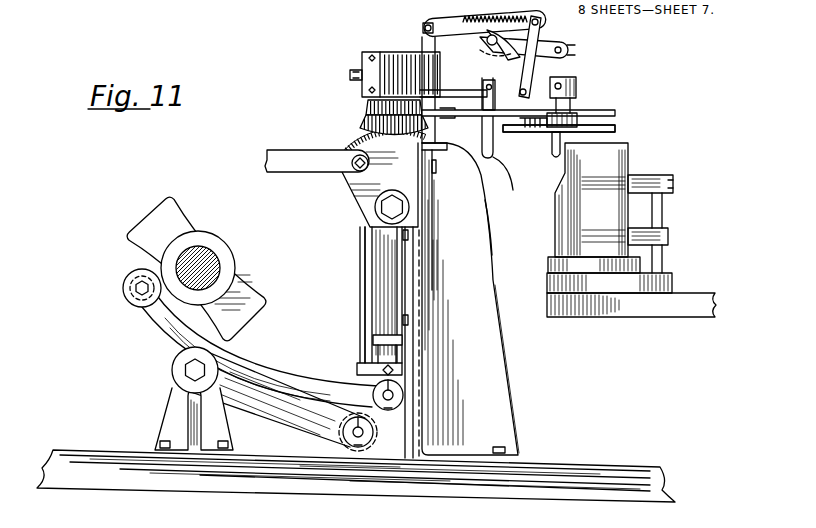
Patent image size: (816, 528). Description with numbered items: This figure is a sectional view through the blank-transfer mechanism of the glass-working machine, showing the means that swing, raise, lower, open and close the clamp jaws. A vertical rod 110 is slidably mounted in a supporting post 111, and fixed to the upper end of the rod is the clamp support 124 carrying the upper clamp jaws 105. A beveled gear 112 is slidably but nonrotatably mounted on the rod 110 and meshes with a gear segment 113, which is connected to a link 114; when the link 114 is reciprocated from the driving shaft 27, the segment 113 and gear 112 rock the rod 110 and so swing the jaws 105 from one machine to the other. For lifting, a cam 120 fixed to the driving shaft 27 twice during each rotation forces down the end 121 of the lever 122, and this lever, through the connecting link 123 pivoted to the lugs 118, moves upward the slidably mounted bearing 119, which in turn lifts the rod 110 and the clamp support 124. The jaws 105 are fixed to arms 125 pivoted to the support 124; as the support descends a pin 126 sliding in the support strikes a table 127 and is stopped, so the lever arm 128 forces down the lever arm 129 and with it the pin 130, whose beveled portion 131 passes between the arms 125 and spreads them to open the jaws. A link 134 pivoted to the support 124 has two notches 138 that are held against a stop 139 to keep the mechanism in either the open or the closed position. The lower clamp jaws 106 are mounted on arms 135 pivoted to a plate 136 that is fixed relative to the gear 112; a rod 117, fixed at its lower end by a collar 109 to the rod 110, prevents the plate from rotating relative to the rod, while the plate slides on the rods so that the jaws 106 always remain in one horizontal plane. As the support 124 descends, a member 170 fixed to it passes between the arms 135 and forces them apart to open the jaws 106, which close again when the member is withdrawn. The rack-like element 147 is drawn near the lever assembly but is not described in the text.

The driving shaft 27 is at (207, 253).
The clamp jaws 105 is at (612, 128).
The clamp jaws 106 is at (607, 98).
The collar 109 is at (418, 372).
The vertical rod 110 is at (387, 263).
The supporting post 111 is at (480, 242).
The beveled gear 112 is at (350, 118).
The gear segment 113 is at (352, 180).
The link 114 is at (290, 167).
The rod 117 is at (370, 243).
The lugs 118 is at (373, 370).
The bearing 119 is at (382, 350).
The cam 120 is at (175, 208).
The end of lever 121 is at (124, 288).
The lever 122 is at (244, 372).
The connecting link 123 is at (373, 407).
The clamp support 124 is at (413, 57).
The arms 125 is at (547, 140).
The pin 126 is at (428, 118).
The table 127 is at (433, 180).
The lever arm 128 is at (440, 20).
The lever arm 129 is at (550, 43).
The pin 130 is at (567, 74).
The beveled portion 131 is at (561, 135).
The link 134 is at (570, 36).
The arms 135 is at (501, 135).
The plate 136 is at (450, 115).
The notches 138 is at (487, 40).
The stop 139 is at (518, 45).
The rack 147 is at (547, 16).
The member 170 is at (514, 222).